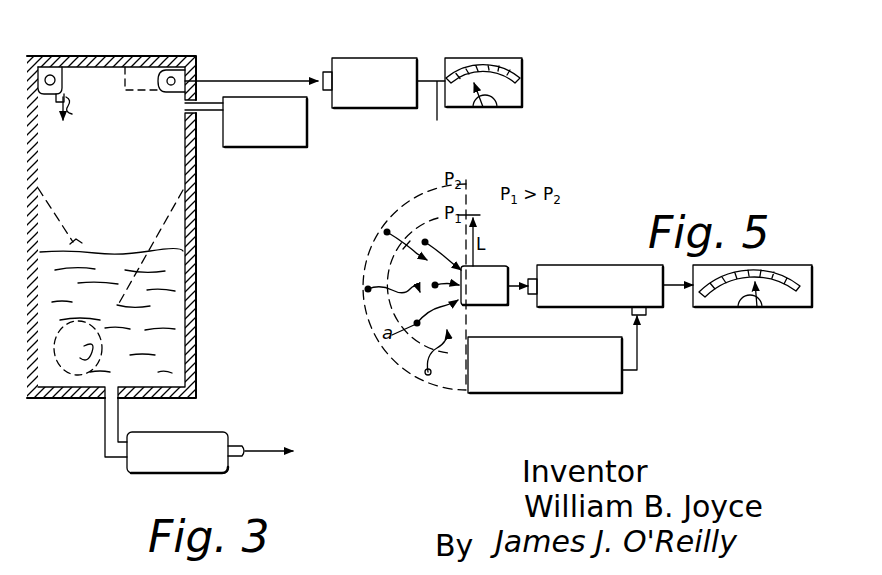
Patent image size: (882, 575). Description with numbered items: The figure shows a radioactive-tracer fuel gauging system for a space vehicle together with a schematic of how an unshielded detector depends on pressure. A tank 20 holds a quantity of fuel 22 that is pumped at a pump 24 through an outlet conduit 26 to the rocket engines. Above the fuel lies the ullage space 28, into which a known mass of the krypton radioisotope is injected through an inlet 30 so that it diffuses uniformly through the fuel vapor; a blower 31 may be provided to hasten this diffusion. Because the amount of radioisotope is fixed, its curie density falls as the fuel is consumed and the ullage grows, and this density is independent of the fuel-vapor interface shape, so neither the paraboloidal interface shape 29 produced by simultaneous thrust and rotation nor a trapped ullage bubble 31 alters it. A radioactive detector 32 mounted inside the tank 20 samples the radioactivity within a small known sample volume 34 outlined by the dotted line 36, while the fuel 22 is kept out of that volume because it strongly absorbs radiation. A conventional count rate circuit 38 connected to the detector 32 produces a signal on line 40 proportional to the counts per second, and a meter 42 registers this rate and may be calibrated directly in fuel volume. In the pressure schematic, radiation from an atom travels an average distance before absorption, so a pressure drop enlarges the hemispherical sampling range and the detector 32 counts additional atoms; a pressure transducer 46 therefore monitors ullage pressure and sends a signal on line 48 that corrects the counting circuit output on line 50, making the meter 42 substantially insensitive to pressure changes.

In FIG. 3, the tank 20 is at (198, 218).
In FIG. 3, the fuel 22 is at (165, 355).
In FIG. 3, the pump 24 is at (181, 432).
In FIG. 3, the outlet conduit 26 is at (240, 457).
In FIG. 3, the ullage space 28 is at (152, 182).
In FIG. 3, the paraboloidal interface shape 29 is at (71, 216).
In FIG. 3, the inlet 30 is at (185, 107).
In FIG. 3, the blower 31 is at (78, 236).
In FIG. 3, the radioactive detector 32 is at (178, 80).
In FIG. 5, the radioactive detector 32 is at (485, 266).
In FIG. 3, the sample volume 34 is at (127, 94).
In FIG. 3, the dotted line 36 is at (118, 82).
In FIG. 3, the count rate circuit 38 is at (398, 108).
In FIG. 5, the count rate circuit 38 is at (608, 265).
In FIG. 3, the line 40 is at (433, 112).
In FIG. 3, the meter 42 is at (483, 69).
In FIG. 5, the meter 42 is at (762, 310).
In FIG. 5, the pressure transducer 46 is at (524, 393).
In FIG. 5, the line 48 is at (640, 342).
In FIG. 5, the line 50 is at (672, 281).